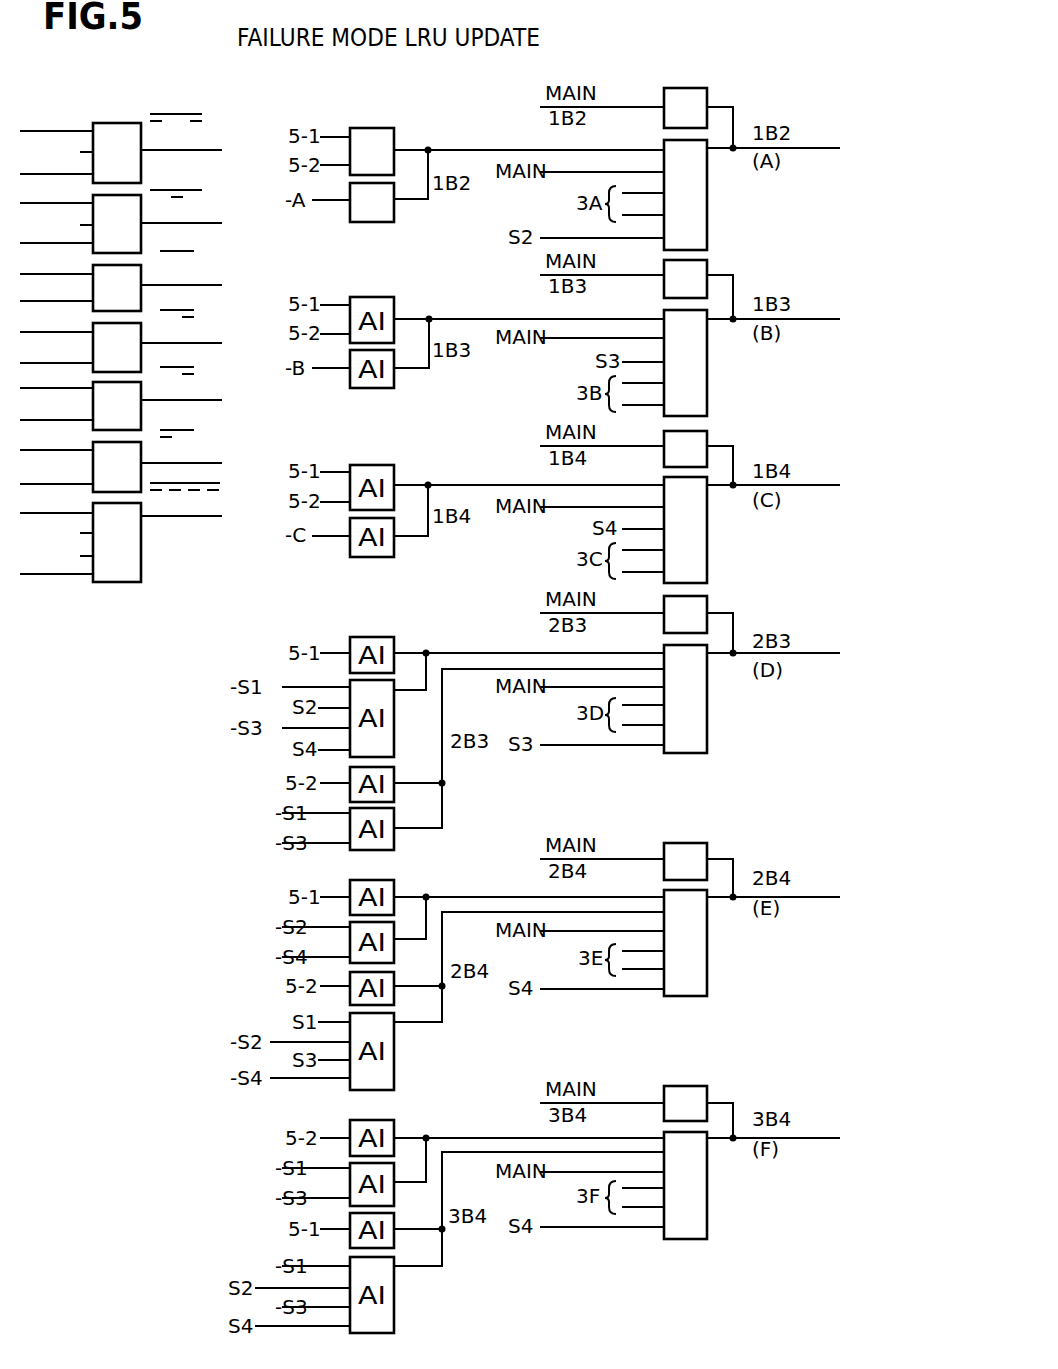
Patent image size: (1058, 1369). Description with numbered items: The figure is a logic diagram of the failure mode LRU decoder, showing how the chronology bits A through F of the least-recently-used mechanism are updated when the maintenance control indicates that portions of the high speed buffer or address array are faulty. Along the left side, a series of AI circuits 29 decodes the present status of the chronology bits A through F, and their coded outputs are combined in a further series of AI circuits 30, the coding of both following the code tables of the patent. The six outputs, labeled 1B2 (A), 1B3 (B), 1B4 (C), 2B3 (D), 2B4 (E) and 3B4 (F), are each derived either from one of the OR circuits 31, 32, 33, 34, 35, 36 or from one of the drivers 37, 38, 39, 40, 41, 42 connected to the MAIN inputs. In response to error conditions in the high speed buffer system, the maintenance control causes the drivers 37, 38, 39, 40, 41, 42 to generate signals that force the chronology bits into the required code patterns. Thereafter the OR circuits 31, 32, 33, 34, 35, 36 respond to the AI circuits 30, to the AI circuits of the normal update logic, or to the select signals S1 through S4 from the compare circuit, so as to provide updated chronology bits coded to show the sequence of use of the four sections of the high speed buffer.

The AI circuits 29 is at (127, 124).
The AI circuits 30 is at (383, 129).
The OR circuit 31 is at (707, 213).
The OR circuit 32 is at (707, 372).
The OR circuit 33 is at (707, 547).
The OR circuit 34 is at (707, 738).
The OR circuit 35 is at (707, 962).
The OR circuit 36 is at (707, 1200).
The driver 37 is at (694, 88).
The driver 38 is at (666, 284).
The driver 39 is at (703, 440).
The driver 40 is at (705, 607).
The driver 41 is at (696, 858).
The driver 42 is at (696, 1092).